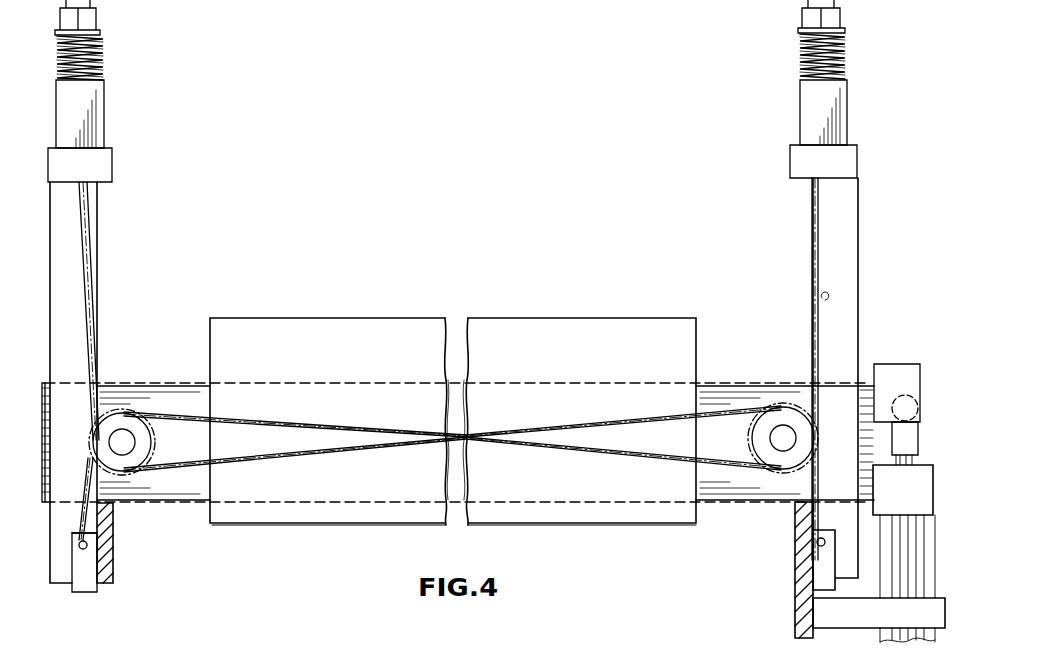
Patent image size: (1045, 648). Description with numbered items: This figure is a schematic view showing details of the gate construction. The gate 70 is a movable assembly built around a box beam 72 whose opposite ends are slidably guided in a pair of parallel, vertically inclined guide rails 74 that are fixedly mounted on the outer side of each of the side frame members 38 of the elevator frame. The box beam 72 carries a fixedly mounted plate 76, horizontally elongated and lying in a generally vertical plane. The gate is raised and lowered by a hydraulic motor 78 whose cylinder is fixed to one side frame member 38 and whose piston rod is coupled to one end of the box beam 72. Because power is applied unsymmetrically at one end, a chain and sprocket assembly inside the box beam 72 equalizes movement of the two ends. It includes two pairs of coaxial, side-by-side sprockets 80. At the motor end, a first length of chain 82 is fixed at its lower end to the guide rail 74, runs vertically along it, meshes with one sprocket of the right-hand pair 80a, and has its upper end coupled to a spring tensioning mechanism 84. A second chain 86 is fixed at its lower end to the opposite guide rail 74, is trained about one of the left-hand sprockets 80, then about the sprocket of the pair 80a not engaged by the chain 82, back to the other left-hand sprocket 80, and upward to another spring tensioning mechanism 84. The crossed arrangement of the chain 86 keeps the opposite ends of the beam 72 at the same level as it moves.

The side frame members 38 is at (106, 562).
The gate 70 is at (305, 311).
The box beam 72 is at (158, 386).
The guide rails 74 is at (88, 214).
The plate 76 is at (476, 322).
The hydraulic motor 78 is at (893, 596).
The sprockets 80 is at (146, 438).
The right-hand pair of sprockets 80a is at (758, 452).
The first length of chain 82 is at (822, 288).
The spring tensioning mechanism 84 is at (126, 54).
The second chain 86 is at (84, 271).